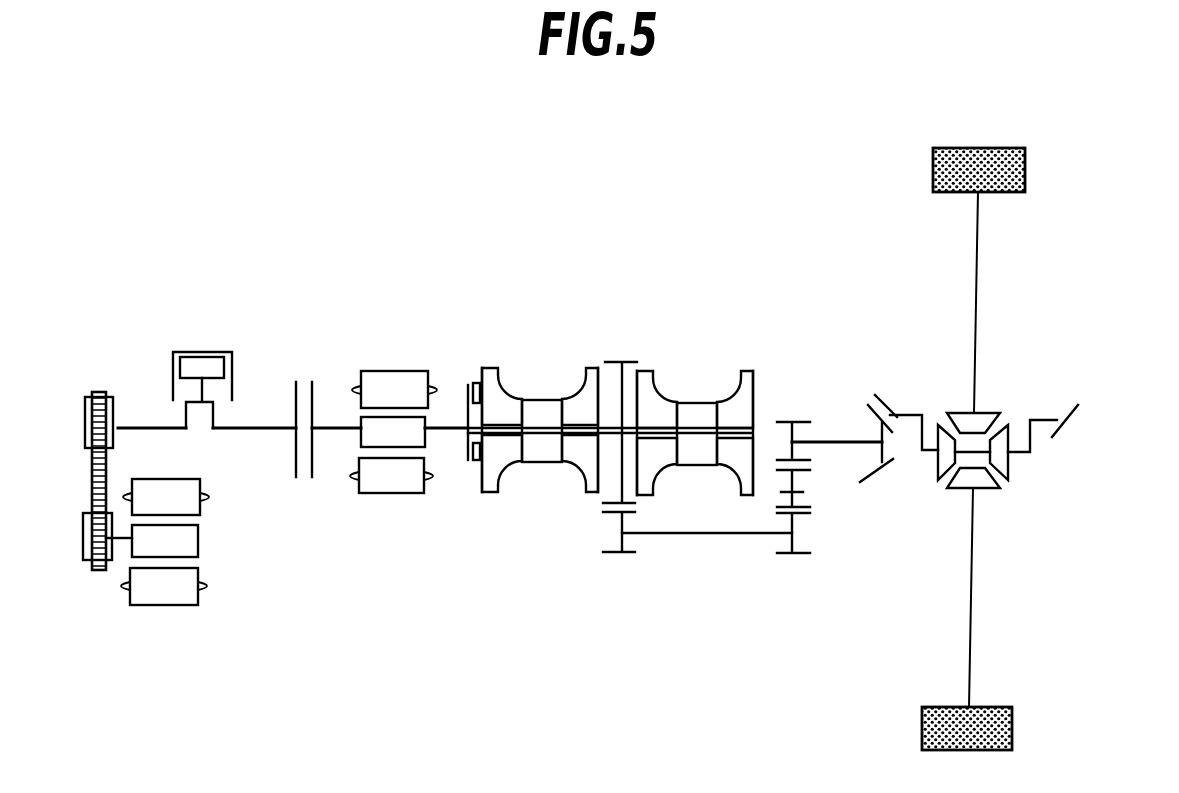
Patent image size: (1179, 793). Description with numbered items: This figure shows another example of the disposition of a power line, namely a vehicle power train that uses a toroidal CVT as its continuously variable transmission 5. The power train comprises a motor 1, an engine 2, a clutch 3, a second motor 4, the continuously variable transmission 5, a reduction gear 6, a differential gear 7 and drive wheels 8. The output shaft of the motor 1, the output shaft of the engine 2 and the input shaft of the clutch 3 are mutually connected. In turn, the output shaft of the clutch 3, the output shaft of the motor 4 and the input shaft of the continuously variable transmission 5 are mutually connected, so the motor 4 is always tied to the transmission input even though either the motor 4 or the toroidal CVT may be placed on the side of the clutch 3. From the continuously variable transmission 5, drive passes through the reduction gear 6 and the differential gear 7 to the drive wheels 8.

The motor 1 is at (146, 526).
The engine 2 is at (160, 362).
The clutch 3 is at (290, 457).
The motor 4 is at (372, 408).
The continuously variable transmission 5 is at (675, 487).
The reduction gear 6 is at (890, 399).
The differential gear 7 is at (1054, 402).
The drive wheels 8 is at (1010, 192).